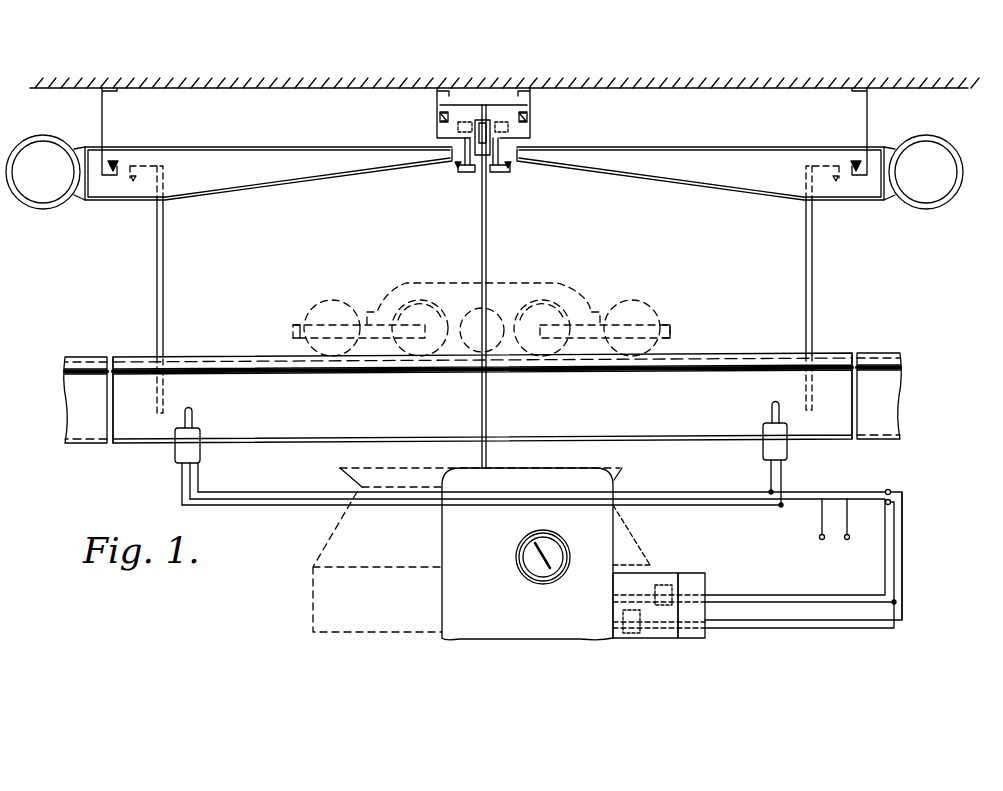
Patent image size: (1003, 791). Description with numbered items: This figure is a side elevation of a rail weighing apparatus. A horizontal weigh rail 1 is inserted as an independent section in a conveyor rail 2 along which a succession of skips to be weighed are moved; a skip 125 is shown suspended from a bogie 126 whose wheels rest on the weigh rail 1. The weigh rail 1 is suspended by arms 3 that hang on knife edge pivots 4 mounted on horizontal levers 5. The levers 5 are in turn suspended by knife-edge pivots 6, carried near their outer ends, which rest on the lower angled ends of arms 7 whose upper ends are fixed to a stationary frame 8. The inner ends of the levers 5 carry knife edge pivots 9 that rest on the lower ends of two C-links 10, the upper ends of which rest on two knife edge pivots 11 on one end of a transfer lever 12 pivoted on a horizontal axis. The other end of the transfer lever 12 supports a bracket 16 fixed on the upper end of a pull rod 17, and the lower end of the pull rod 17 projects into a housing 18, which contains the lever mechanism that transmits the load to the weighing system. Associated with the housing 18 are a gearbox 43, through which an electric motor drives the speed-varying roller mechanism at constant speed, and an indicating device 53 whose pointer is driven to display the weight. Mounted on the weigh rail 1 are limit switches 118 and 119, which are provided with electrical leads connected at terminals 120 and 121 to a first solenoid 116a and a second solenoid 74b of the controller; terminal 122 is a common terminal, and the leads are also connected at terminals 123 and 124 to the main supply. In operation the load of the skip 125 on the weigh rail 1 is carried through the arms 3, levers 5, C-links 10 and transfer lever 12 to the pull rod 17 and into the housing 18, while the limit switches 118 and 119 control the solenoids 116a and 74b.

The weigh rail 1 is at (700, 380).
The conveyor rail 2 is at (65, 400).
The arms 3 is at (165, 285).
The knife edge pivots 4 is at (133, 181).
The horizontal levers 5 is at (212, 150).
The knife-edge pivots 6 is at (119, 158).
The arms 7 is at (102, 113).
The stationary frame 8 is at (268, 88).
The knife edge pivots 9 is at (456, 167).
The C-links 10 is at (492, 137).
The knife edge pivots 11 is at (456, 130).
The transfer lever 12 is at (485, 112).
The bracket 16 is at (486, 160).
The pull rod 17 is at (488, 241).
The housing 18 is at (527, 554).
The gearbox 43 is at (633, 590).
The indicating device 53 is at (565, 566).
The second solenoid 74b is at (683, 587).
The first solenoid 116a is at (637, 633).
The limit switch 118 is at (200, 457).
The limit switch 119 is at (787, 452).
The terminal 120 is at (896, 488).
The terminal 121 is at (891, 504).
The common terminal 122 is at (893, 494).
The terminal 123 is at (818, 537).
The terminal 124 is at (847, 540).
The skip 125 is at (320, 600).
The bogie 126 is at (455, 282).